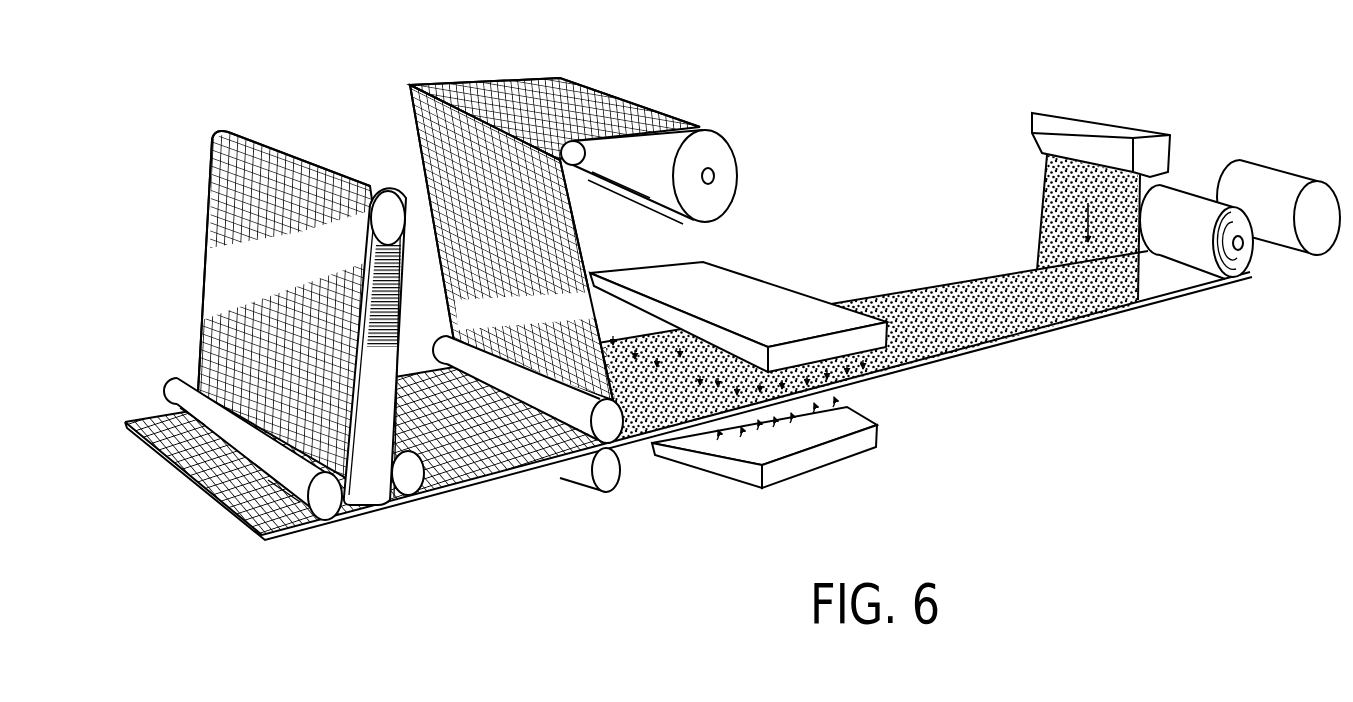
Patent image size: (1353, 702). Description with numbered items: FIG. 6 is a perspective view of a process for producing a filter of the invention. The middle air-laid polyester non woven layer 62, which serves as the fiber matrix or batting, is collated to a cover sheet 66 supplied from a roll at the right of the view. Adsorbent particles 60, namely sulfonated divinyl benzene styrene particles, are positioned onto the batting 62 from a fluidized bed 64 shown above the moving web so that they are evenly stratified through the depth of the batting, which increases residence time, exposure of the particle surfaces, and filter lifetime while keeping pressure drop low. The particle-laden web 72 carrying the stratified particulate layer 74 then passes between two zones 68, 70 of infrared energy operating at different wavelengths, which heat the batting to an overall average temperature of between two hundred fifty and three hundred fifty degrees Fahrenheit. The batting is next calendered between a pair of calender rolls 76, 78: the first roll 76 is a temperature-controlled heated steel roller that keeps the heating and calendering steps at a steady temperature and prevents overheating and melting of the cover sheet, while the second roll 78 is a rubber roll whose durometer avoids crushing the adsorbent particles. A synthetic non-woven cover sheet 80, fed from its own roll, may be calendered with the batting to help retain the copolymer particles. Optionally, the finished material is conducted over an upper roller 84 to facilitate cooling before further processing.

The adsorbent particles 60 is at (1030, 197).
The middle air-laid polyester non woven layer 62 is at (1183, 283).
The fluidized bed 64 is at (1165, 146).
The cover sheet 66 is at (1265, 177).
The zone of infrared energy 68 is at (820, 453).
The zone of infrared energy 70 is at (655, 283).
The conveyor sheet 72 is at (850, 385).
The particulate layer 74 is at (690, 345).
The heated steel roller 76 is at (608, 434).
The rubber roll 78 is at (607, 484).
The synthetic non-woven cover sheet 80 is at (720, 178).
The upper roller 84 is at (228, 128).